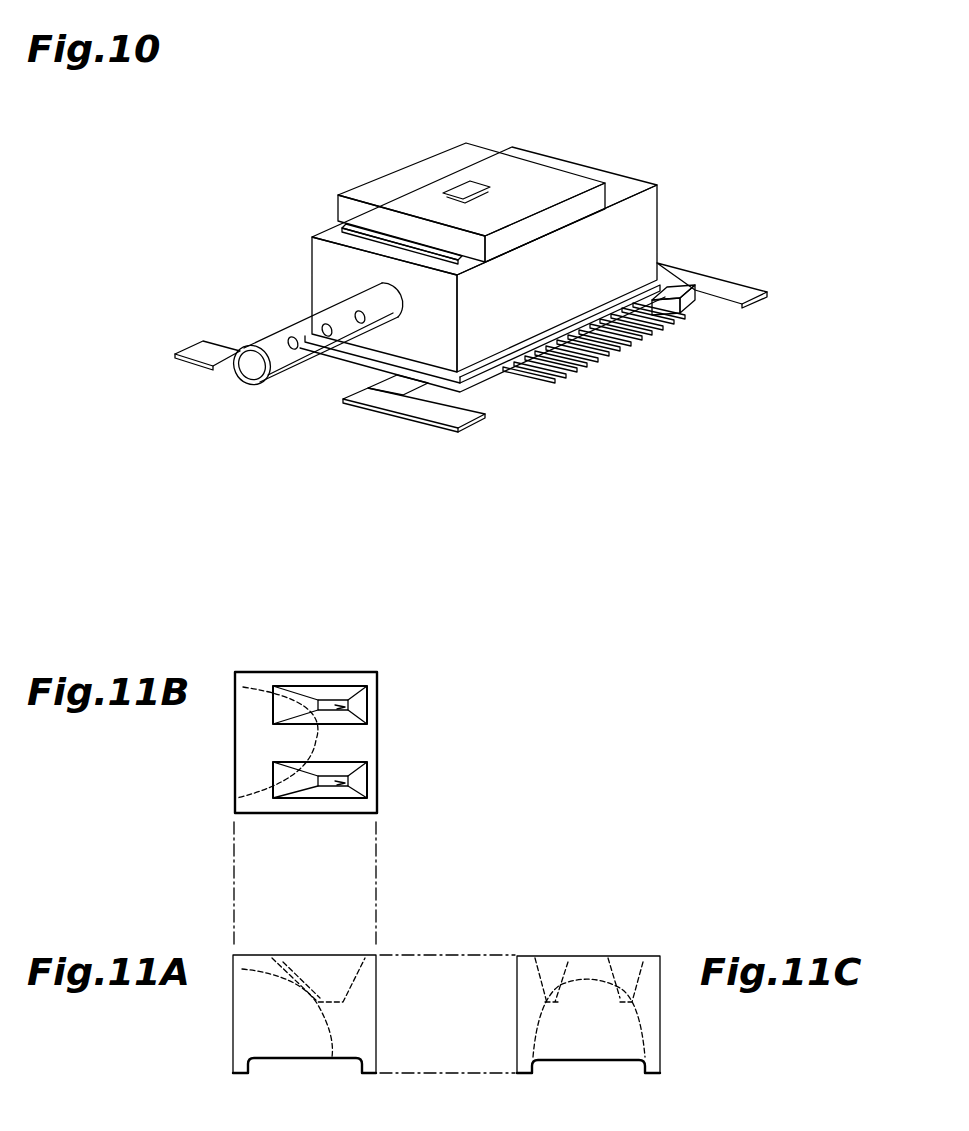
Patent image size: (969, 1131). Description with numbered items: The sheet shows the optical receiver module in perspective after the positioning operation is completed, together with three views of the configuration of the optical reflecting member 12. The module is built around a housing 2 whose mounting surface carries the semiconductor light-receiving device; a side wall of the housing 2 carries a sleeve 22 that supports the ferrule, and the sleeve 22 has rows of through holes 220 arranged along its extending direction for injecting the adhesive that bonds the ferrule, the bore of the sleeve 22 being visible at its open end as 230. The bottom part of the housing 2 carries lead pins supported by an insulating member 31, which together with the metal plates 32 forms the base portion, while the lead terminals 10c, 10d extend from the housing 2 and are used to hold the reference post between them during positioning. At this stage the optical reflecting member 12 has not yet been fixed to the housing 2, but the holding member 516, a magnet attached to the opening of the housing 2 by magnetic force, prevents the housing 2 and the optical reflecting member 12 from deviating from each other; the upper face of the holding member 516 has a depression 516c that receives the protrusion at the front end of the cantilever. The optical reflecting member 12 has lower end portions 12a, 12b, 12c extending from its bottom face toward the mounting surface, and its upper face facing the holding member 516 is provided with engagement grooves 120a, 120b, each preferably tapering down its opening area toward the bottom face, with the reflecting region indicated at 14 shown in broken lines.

In FIG. 10, the housing 2 is at (658, 219).
In FIG. 10, the holding member 516 is at (400, 180).
In FIG. 10, the depression 516c is at (463, 185).
In FIG. 10, the optical reflecting member 12 is at (360, 234).
In FIG. 11B, the optical reflecting member 12 is at (297, 672).
In FIG. 11A, the optical reflecting member 12 is at (372, 1031).
In FIG. 11C, the optical reflecting member 12 is at (662, 1033).
In FIG. 10, the sleeve 22 is at (299, 337).
In FIG. 10, the through holes 220 is at (299, 337).
In FIG. 10, the sleeve bore 230 is at (253, 372).
In FIG. 10, the lead terminal 10c is at (192, 350).
In FIG. 10, the lead terminal 10d is at (395, 403).
In FIG. 10, the insulating member 31 is at (703, 300).
In FIG. 10, the metal plates 32 is at (690, 316).
In FIG. 11B, the groove 14 is at (243, 687).
In FIG. 11A, the groove 14 is at (242, 969).
In FIG. 11C, the groove 14 is at (537, 1025).
In FIG. 11B, the engagement groove 120a is at (350, 707).
In FIG. 11A, the engagement groove 120a is at (360, 977).
In FIG. 11C, the engagement groove 120a is at (637, 955).
In FIG. 11B, the engagement groove 120b is at (350, 782).
In FIG. 11A, the engagement groove 120b is at (301, 980).
In FIG. 11C, the engagement groove 120b is at (545, 955).
In FIG. 11A, the lower end portion 12a is at (240, 1077).
In FIG. 11A, the lower end portion 12b is at (367, 1077).
In FIG. 11C, the lower end portion 12b is at (648, 1077).
In FIG. 11C, the lower end portion 12c is at (523, 1077).